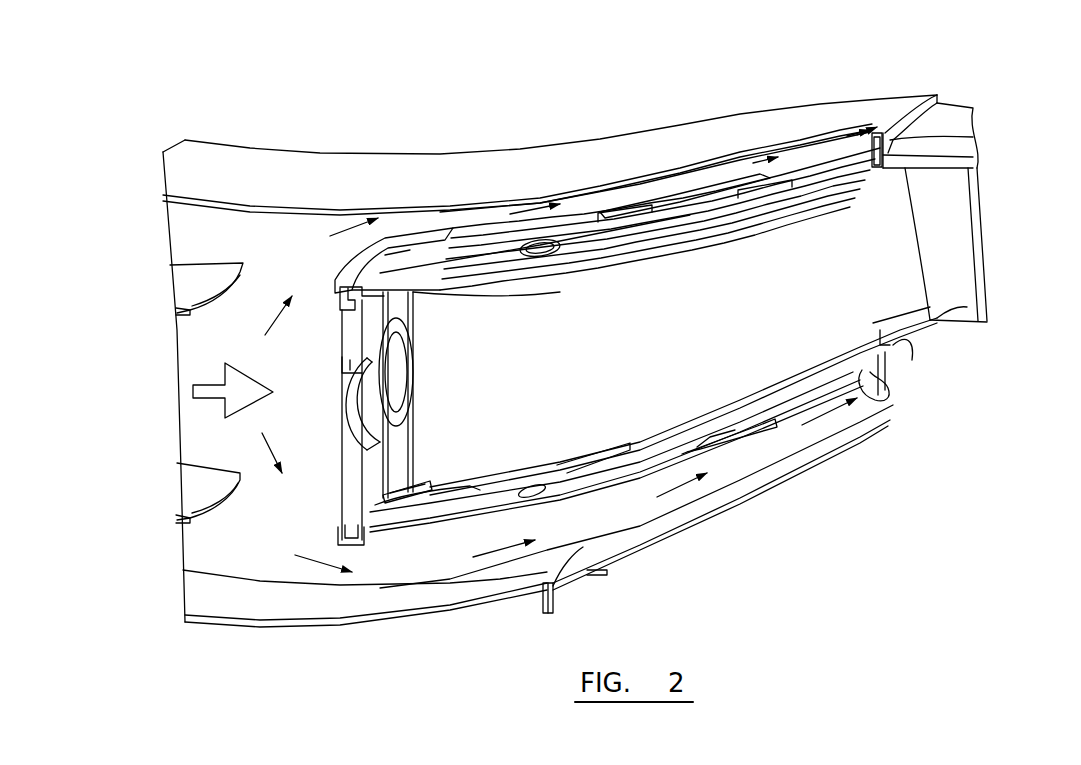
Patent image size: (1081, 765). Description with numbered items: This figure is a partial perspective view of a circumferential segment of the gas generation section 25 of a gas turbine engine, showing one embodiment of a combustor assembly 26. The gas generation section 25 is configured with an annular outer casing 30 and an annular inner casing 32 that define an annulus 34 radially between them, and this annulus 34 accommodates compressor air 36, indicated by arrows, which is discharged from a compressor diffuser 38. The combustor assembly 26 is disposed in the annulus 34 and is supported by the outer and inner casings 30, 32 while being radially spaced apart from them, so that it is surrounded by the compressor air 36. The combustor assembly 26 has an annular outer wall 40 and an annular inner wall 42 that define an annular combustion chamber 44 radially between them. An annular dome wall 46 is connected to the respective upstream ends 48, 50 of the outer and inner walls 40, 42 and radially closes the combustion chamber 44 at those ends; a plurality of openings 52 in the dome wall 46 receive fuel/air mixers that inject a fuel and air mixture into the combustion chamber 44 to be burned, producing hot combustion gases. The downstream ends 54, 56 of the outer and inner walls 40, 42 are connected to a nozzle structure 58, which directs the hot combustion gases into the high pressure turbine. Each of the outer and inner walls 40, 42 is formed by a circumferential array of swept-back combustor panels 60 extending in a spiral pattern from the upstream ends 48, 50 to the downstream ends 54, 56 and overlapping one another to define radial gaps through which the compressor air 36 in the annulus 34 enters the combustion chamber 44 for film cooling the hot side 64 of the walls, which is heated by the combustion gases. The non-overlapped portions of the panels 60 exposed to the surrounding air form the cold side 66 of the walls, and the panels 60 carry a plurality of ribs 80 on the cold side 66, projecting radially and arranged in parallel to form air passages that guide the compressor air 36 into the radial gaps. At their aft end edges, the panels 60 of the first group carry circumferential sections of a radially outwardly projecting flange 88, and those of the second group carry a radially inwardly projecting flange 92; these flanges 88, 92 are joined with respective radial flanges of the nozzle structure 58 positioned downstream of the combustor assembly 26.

The gas generation section 25 is at (483, 88).
The combustor assembly 26 is at (430, 532).
The annular outer casing 30 is at (232, 158).
The annular inner casing 32 is at (231, 625).
The annulus 34 is at (296, 275).
The compressor air 36 is at (282, 480).
The compressor diffuser 38 is at (186, 280).
The annular outer wall 40 is at (730, 242).
The annular inner wall 42 is at (740, 405).
The annular combustion chamber 44 is at (626, 343).
The annular dome wall 46 is at (397, 443).
The upstream end of annular outer wall 48 is at (398, 240).
The upstream end of annular inner wall 50 is at (418, 492).
The openings 52 is at (405, 372).
The downstream end of annular outer wall 54 is at (866, 170).
The downstream end of annular inner wall 56 is at (902, 313).
The nozzle structure 58 is at (950, 210).
The swept-back combustor panels 60 is at (652, 248).
The hot side 64 is at (573, 480).
The cold side 66 is at (851, 153).
The ribs 80 is at (438, 235).
The flange 88 is at (977, 137).
The flange 92 is at (888, 402).